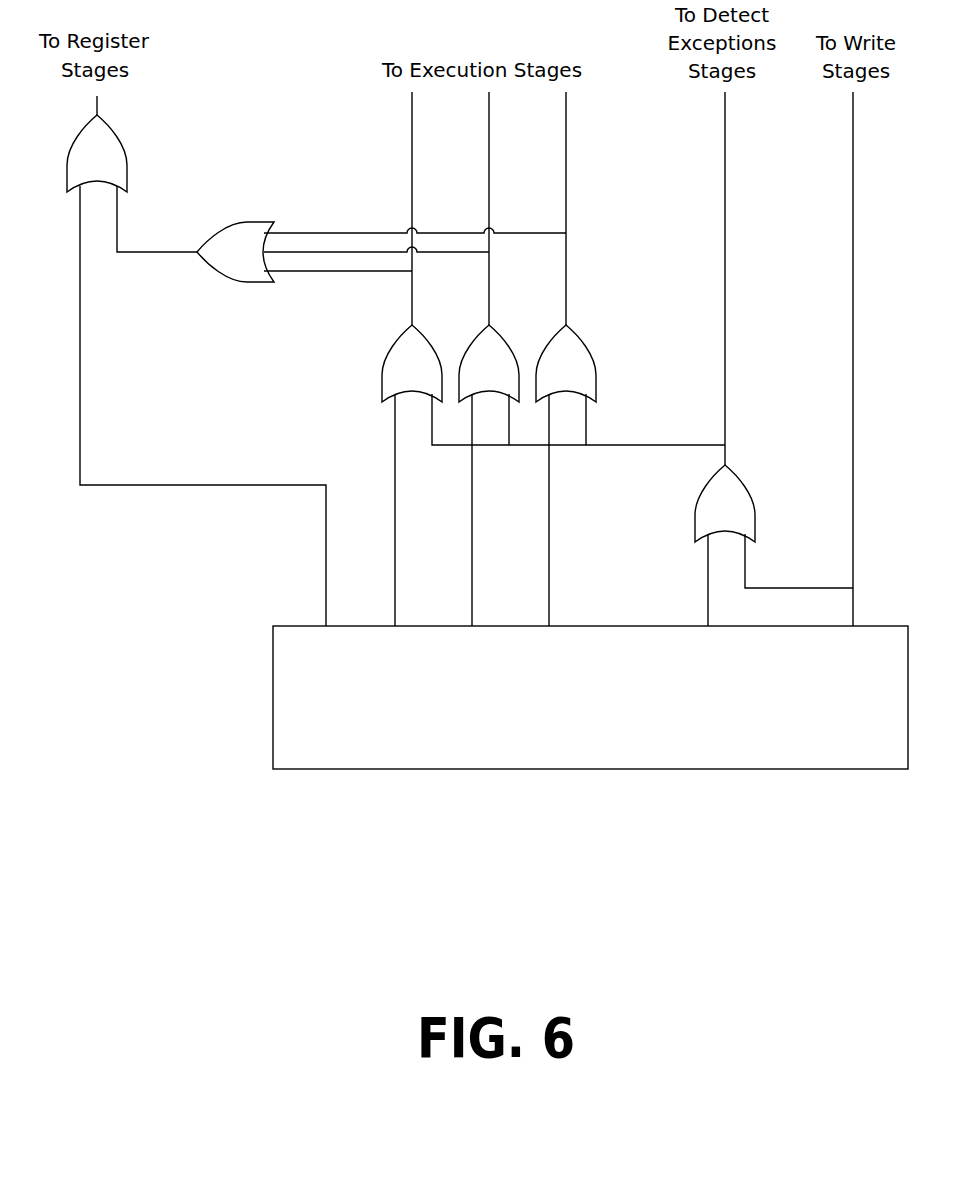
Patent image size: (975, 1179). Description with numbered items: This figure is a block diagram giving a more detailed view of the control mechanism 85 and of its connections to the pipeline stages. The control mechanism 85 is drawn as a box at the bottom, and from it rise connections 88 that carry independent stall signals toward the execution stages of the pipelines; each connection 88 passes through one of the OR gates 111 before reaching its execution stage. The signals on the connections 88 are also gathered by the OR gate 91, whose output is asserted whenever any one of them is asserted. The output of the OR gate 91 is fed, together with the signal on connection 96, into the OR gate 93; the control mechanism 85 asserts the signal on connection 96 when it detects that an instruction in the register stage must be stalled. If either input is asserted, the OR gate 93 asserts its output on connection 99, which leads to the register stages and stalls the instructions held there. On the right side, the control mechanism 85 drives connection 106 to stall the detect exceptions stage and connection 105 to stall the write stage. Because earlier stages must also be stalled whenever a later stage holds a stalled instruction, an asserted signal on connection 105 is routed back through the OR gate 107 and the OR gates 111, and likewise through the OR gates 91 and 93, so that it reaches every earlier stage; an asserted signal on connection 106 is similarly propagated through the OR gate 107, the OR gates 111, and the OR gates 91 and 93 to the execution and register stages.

The control mechanism 85 is at (550, 769).
The connections 88 is at (395, 554).
The OR gate 91 is at (260, 223).
The OR gate 93 is at (124, 150).
The connection 96 is at (158, 485).
The connection 99 is at (98, 100).
The connection 105 is at (853, 341).
The connection 106 is at (708, 552).
The OR gate 107 is at (755, 500).
The OR gates 111 is at (383, 360).